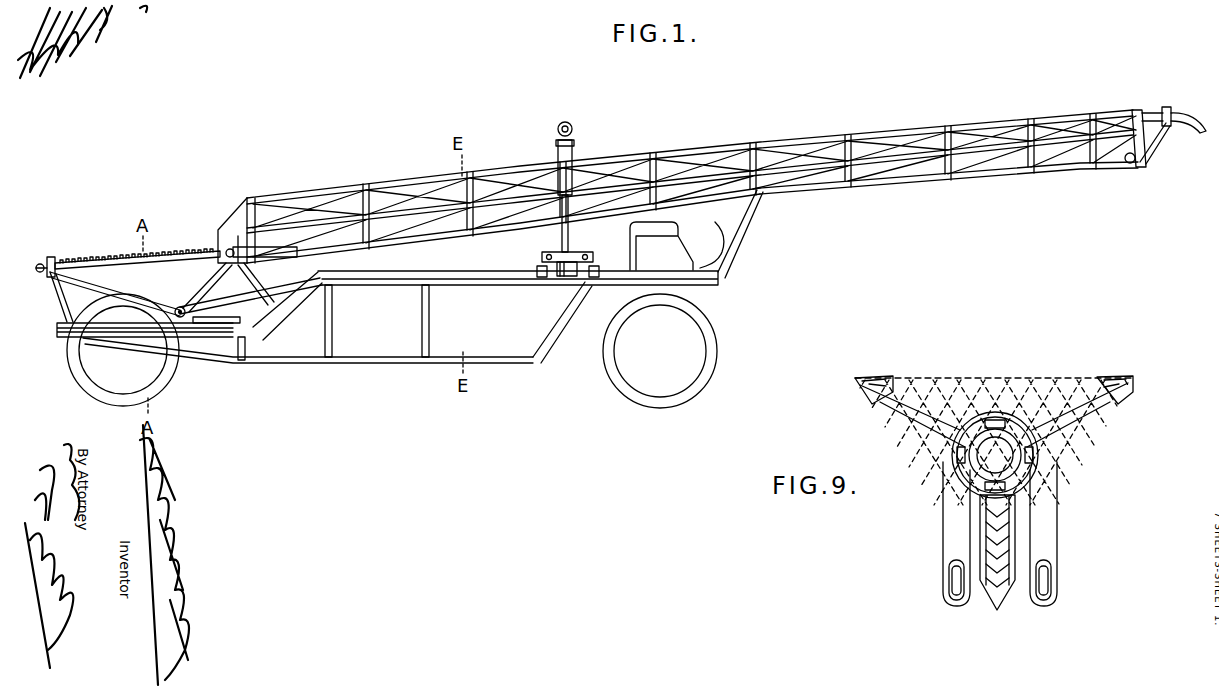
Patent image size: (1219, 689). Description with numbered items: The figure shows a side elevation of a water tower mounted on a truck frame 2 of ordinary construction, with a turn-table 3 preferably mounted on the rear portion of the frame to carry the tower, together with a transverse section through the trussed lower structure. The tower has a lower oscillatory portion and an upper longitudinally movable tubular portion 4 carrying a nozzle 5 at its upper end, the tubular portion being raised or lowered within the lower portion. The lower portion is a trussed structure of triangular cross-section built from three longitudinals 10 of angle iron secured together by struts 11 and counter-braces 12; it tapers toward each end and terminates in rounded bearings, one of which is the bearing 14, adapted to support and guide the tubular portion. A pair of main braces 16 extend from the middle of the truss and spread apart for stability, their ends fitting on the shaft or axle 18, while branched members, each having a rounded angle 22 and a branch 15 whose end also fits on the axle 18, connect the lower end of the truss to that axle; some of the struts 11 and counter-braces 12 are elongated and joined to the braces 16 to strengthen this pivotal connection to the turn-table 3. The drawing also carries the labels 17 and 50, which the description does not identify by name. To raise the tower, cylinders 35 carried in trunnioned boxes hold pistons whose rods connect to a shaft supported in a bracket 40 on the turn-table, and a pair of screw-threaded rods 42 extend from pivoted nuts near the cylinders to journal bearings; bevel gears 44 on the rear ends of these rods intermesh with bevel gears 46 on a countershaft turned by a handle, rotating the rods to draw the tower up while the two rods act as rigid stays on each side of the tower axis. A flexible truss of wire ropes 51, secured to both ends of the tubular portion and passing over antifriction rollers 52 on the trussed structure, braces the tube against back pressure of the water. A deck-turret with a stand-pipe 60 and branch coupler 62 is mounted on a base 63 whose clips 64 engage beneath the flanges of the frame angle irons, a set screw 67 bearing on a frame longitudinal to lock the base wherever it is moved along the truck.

In FIG. 1, the truck frame 2 is at (490, 282).
In FIG. 1, the turn-table 3 is at (227, 324).
In FIG. 1, the tubular portion 4 is at (780, 163).
In FIG. 9, the tubular portion 4 is at (978, 462).
In FIG. 1, the nozzle 5 is at (1180, 118).
In FIG. 1, the longitudinals 10 is at (892, 128).
In FIG. 9, the longitudinals 10 is at (866, 382).
In FIG. 1, the struts 11 is at (630, 162).
In FIG. 9, the struts 11 is at (1076, 468).
In FIG. 1, the counter-braces 12 is at (800, 176).
In FIG. 1, the rounded bearing 14 is at (1137, 110).
In FIG. 9, the rounded bearing 14 is at (1020, 420).
In FIG. 1, the branch 15 is at (212, 282).
In FIG. 1, the main braces 16 is at (475, 253).
In FIG. 1, the pivot bar 17 is at (185, 320).
In FIG. 1, the shaft or axle 18 is at (179, 307).
In FIG. 1, the rounded angle 22 is at (230, 230).
In FIG. 1, the cylinders 35 is at (272, 248).
In FIG. 1, the bracket 40 is at (62, 322).
In FIG. 1, the screw-threaded rods 42 is at (86, 262).
In FIG. 1, the bevel gears 44 is at (48, 258).
In FIG. 1, the bevel gears 46 is at (52, 280).
In FIG. 1, the brace 50 is at (1126, 158).
In FIG. 1, the wire ropes 51 is at (1046, 172).
In FIG. 9, the antifriction rollers 52 is at (948, 585).
In FIG. 1, the stand-pipe 60 is at (569, 238).
In FIG. 1, the branch coupler 62 is at (594, 257).
In FIG. 1, the base 63 is at (575, 275).
In FIG. 1, the clips 64 is at (538, 266).
In FIG. 1, the set screw 67 is at (560, 272).